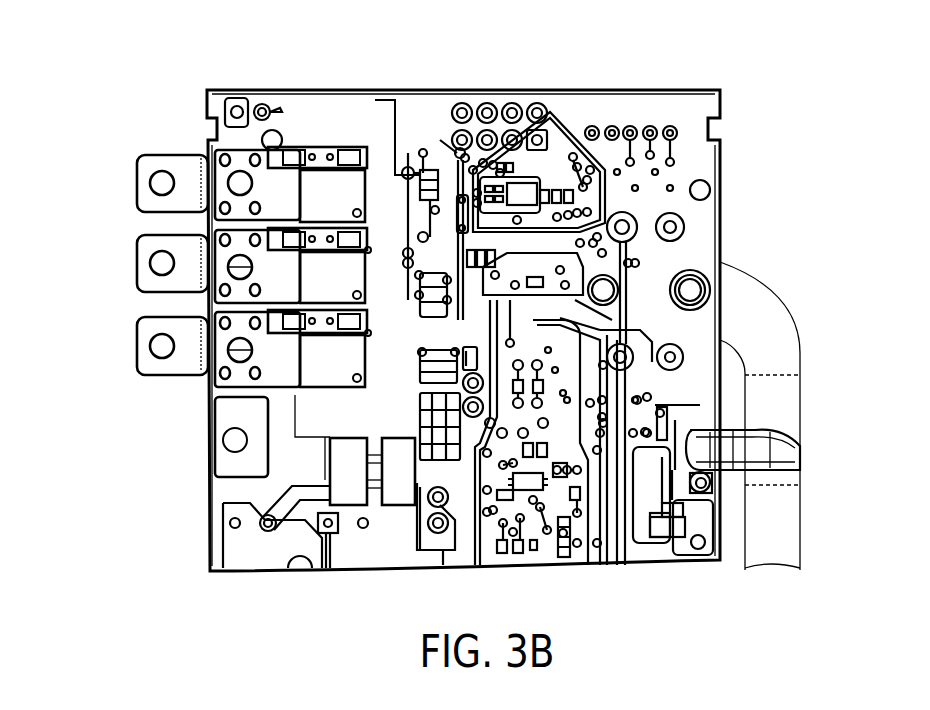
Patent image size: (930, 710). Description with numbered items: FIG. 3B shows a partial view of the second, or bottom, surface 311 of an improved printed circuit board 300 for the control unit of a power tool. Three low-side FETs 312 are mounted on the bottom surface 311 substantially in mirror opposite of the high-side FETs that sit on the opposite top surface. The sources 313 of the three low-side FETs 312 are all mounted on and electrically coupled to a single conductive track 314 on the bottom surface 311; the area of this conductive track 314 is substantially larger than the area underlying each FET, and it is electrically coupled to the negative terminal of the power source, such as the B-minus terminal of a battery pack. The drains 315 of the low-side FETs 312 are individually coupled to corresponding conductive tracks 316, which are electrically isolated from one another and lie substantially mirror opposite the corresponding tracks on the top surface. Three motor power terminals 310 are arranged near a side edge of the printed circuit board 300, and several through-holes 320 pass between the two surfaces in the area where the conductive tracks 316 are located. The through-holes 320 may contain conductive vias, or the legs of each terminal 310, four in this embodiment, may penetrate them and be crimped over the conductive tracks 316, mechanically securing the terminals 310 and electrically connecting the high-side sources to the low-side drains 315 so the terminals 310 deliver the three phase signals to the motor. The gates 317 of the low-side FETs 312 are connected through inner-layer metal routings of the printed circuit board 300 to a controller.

The printed circuit board 300 is at (753, 60).
The motor power terminals 310 is at (137, 183).
The second surface (bottom surface) 311 is at (660, 100).
The low-side FETs 312 is at (357, 267).
The sources of low-side FETs 313 is at (363, 287).
The conductive track 314 is at (393, 122).
The drains of low-side FETs 315 is at (300, 202).
The conductive tracks 316 is at (287, 182).
The gates of low-side FETs 317 is at (363, 342).
The through-holes 320 is at (217, 155).